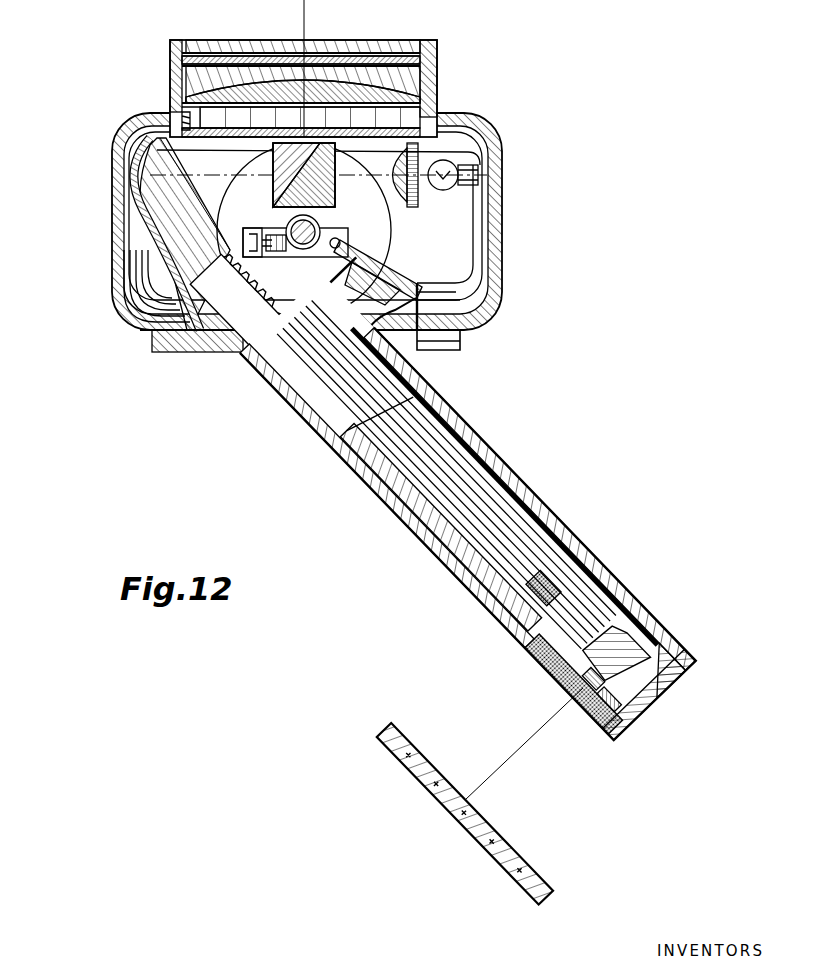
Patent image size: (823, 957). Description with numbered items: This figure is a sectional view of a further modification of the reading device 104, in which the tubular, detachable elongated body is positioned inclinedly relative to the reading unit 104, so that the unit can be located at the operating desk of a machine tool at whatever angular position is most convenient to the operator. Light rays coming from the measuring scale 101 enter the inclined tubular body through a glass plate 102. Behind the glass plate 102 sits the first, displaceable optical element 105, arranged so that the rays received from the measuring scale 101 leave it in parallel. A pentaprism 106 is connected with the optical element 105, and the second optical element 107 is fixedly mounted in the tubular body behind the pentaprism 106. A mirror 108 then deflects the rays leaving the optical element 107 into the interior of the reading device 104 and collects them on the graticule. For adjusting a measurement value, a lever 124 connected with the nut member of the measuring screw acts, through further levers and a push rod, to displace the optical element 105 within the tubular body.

The measuring scale 101 is at (378, 730).
The glass plate 102 is at (527, 663).
The reading device 104 is at (506, 108).
The first displaceable optical element 105 is at (637, 712).
The pentaprism 106 is at (610, 638).
The second optical element 107 is at (553, 572).
The mirror 108 is at (140, 166).
The lever 124 is at (388, 262).